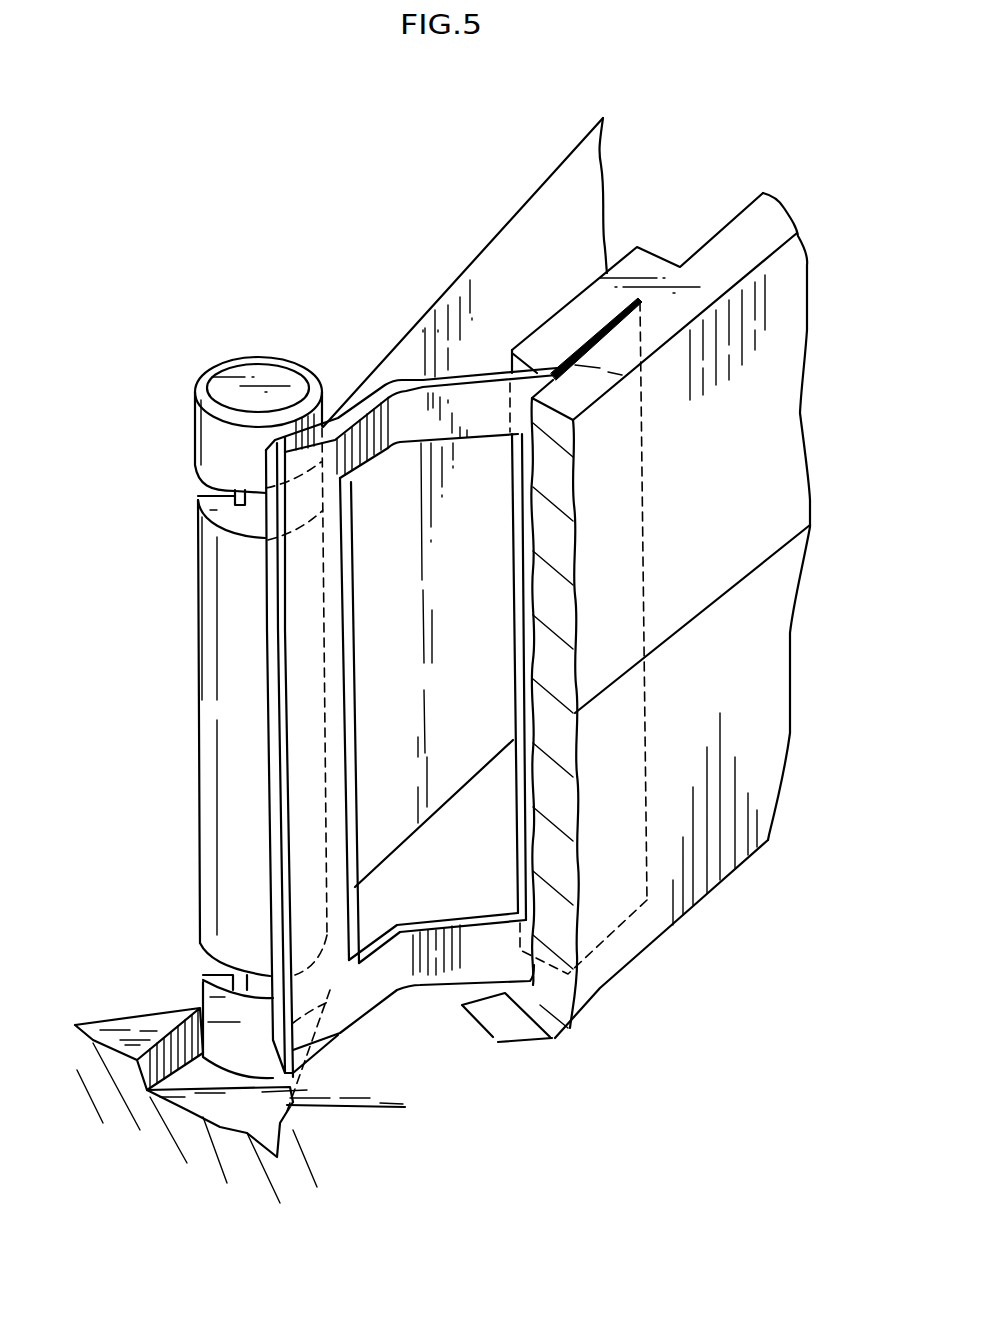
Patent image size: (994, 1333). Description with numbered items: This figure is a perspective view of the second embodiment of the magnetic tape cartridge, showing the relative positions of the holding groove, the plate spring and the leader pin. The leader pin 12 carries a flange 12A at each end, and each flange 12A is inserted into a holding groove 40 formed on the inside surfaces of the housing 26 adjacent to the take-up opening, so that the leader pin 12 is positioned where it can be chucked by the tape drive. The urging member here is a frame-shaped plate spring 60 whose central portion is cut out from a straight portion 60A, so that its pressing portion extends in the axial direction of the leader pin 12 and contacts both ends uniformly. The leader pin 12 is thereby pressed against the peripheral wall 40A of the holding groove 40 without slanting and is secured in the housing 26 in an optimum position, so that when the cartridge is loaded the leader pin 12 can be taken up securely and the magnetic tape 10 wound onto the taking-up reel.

The magnetic tape 10 is at (535, 243).
The leader pin 12 is at (183, 735).
The flange 12A is at (205, 435).
The housing 26 is at (783, 343).
The holding groove 40 is at (248, 1112).
The peripheral wall 40A is at (160, 1090).
The frame-shaped plate spring 60 is at (410, 380).
The straight portion 60A is at (483, 407).